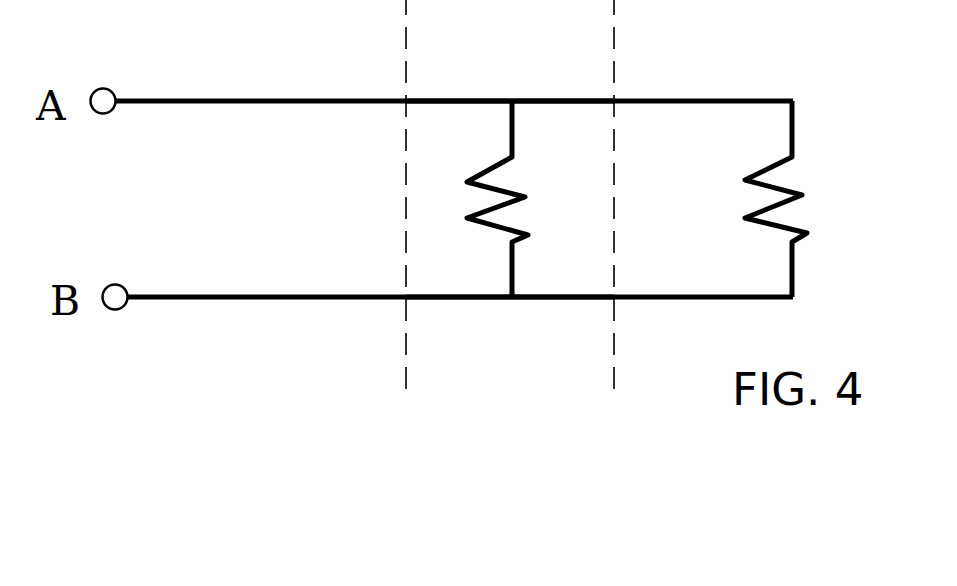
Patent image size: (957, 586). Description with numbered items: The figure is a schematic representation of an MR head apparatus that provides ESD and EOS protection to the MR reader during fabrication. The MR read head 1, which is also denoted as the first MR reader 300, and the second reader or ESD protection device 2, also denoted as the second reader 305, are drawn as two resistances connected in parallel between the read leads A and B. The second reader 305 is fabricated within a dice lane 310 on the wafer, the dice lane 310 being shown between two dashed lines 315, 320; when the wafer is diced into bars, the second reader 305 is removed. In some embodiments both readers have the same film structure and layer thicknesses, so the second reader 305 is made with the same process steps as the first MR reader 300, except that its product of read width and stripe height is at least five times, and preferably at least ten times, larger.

The first MR reader 300 is at (758, 199).
The second reader 305 is at (492, 199).
The dice lane 310 is at (502, 18).
The dashed line 315 is at (406, 323).
The dashed line 320 is at (614, 313).
The MR read head 1 is at (796, 199).
The ESD protection device 2 is at (518, 199).